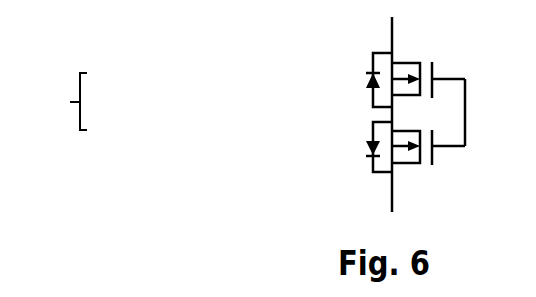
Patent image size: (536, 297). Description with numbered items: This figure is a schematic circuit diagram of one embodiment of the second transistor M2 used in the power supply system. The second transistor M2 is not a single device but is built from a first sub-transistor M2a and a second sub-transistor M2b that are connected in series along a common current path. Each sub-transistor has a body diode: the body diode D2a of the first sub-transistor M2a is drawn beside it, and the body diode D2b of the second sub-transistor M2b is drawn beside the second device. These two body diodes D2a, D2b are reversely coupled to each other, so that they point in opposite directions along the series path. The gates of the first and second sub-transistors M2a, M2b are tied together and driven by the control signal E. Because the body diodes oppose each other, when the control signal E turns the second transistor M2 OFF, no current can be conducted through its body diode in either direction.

The second transistor M2 is at (85, 101).
The first sub-transistor M2a is at (428, 63).
The second sub-transistor M2b is at (428, 162).
The body diode of the first sub-transistor D2a is at (356, 80).
The body diode of the second sub-transistor D2b is at (355, 147).
The control signal E is at (473, 112).